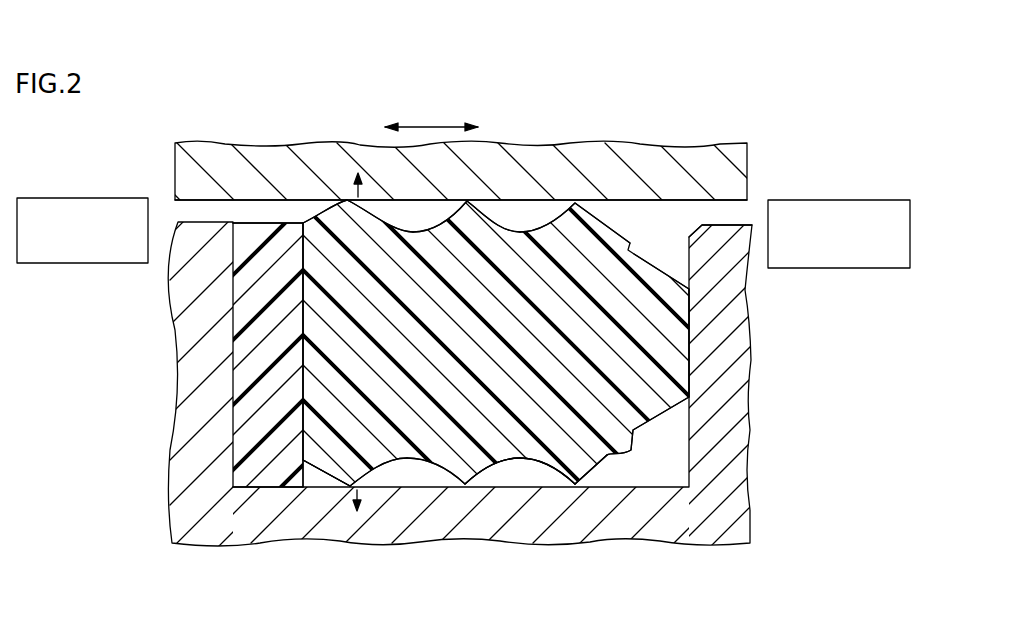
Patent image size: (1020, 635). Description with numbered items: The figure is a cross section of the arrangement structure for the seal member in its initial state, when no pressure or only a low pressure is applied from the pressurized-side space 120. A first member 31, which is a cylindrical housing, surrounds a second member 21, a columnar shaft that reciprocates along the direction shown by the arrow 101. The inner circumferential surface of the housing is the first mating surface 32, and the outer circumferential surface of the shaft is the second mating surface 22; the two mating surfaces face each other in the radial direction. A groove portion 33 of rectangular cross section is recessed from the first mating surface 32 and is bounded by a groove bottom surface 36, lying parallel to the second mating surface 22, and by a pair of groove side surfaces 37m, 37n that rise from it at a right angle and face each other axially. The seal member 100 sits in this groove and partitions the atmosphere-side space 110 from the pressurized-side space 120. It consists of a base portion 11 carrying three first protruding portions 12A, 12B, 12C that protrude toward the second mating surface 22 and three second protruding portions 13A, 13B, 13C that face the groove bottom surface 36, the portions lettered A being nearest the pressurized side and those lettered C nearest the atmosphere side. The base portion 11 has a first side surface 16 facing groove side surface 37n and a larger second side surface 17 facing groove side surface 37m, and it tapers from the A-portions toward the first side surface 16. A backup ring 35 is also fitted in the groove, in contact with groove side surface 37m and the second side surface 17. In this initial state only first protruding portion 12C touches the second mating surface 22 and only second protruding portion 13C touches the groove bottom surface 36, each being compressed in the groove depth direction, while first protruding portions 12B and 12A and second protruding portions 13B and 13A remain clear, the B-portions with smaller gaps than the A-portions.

The second member 21 is at (205, 163).
The second mating surface 22 is at (648, 218).
The arrow 101 is at (431, 124).
The first member 31 is at (205, 510).
The first mating surface 32 is at (717, 224).
The base portion 11 is at (405, 392).
The backup ring 35 is at (270, 247).
The second side surface 17 is at (300, 388).
The first protruding portion 12C is at (356, 212).
The first protruding portion 12B is at (467, 203).
The first protruding portion 12A is at (577, 203).
The second protruding portion 13C is at (357, 480).
The second protruding portion 13B is at (465, 485).
The second protruding portion 13A is at (576, 484).
The first side surface 16 is at (690, 345).
The groove bottom surface 36 is at (519, 472).
The groove portion 33 is at (657, 468).
The groove side surface 37m is at (236, 333).
The groove side surface 37n is at (676, 435).
The seal member 100 is at (613, 462).
The atmosphere-side space 110 is at (44, 198).
The pressurized-side space 120 is at (882, 200).